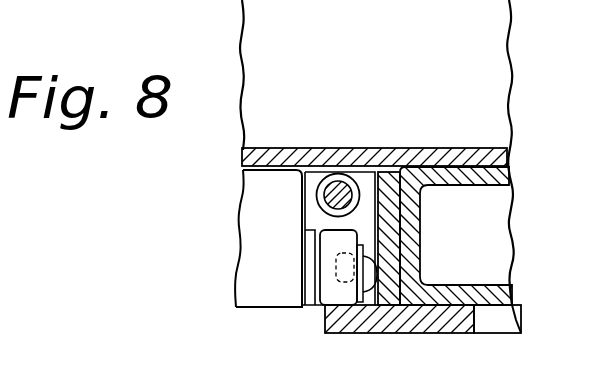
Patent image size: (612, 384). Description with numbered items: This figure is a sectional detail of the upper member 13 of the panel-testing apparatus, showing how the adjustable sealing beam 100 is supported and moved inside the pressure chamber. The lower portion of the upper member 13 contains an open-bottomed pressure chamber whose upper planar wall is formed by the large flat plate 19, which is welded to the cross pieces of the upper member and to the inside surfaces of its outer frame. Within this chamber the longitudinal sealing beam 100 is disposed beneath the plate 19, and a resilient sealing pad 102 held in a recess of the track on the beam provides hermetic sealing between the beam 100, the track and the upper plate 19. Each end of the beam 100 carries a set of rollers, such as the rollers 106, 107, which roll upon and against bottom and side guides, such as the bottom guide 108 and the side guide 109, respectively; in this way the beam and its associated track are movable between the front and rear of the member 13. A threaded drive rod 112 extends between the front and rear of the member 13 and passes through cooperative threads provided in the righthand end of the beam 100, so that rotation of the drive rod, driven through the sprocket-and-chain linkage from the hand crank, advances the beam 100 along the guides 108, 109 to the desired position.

The upper member 13 is at (490, 62).
The flat plate 19 is at (455, 156).
The sealing beam 100 is at (263, 306).
The resilient sealing pad 102 is at (278, 164).
The roller 106 is at (332, 286).
The roller 107 is at (367, 272).
The bottom guide 108 is at (455, 326).
The side guide 109 is at (392, 173).
The drive rod 112 is at (338, 192).